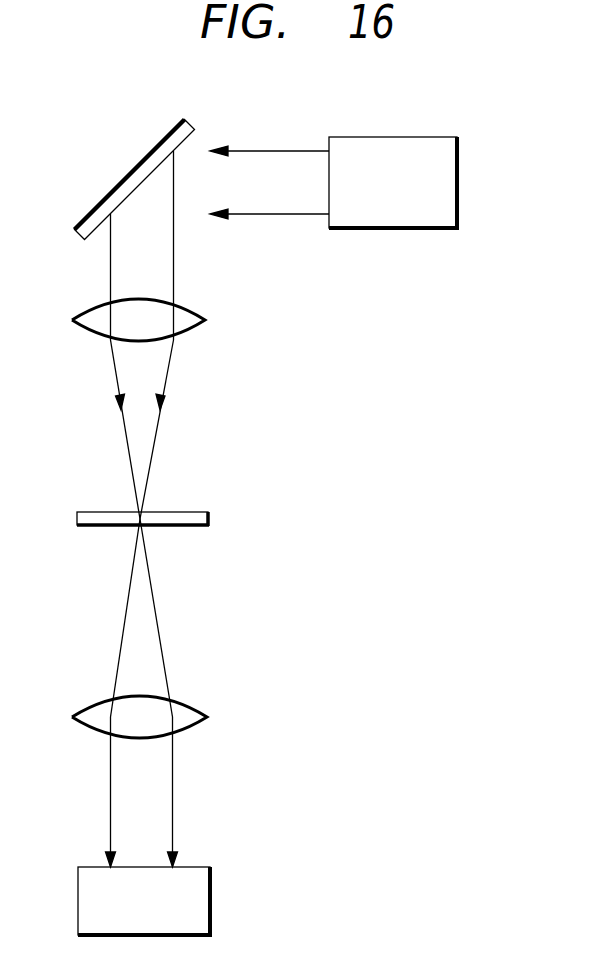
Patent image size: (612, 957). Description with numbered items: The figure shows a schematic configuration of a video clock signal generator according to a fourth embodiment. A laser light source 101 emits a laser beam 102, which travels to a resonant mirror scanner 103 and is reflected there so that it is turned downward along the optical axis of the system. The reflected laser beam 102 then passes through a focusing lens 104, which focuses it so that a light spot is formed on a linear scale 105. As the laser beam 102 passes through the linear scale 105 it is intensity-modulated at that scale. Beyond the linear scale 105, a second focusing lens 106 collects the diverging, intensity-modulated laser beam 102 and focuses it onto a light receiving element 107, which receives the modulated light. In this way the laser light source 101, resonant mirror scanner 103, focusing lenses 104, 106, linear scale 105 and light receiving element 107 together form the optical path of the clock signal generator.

The laser light source 101 is at (458, 173).
The laser beam 102 is at (260, 151).
The resonant mirror scanner 103 is at (120, 185).
The focusing lens 104 is at (185, 318).
The linear scale 105 is at (198, 512).
The focusing lens 106 is at (188, 715).
The light receiving element 107 is at (210, 898).